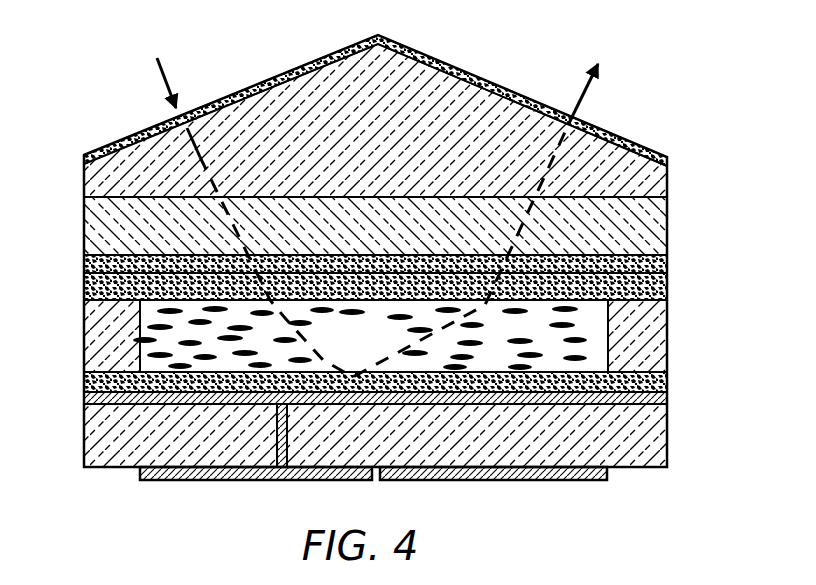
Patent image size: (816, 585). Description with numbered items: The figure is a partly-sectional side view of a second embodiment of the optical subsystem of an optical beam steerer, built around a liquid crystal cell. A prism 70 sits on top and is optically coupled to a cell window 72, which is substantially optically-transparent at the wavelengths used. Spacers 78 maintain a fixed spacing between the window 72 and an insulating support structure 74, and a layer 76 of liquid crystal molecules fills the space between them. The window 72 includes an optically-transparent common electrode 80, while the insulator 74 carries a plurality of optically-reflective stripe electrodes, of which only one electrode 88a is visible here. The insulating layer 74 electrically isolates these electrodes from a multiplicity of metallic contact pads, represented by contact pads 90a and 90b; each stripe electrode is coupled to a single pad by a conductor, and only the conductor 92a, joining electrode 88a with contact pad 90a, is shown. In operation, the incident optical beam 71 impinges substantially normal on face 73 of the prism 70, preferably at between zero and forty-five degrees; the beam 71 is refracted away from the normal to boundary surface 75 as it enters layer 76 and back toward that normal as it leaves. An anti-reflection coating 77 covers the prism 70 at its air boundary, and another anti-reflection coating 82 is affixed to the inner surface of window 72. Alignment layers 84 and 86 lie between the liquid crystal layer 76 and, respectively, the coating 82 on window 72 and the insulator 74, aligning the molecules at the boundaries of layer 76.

The prism 70 is at (408, 72).
The incident optical beam 71 is at (160, 80).
The cell window 72 is at (658, 223).
The face of prism 73 is at (338, 53).
The insulating support structure 74 is at (657, 448).
The boundary surface 75 is at (200, 148).
The layer of liquid crystal molecules 76 is at (360, 338).
The anti-reflection coating 77 is at (505, 90).
The spacers 78 is at (92, 343).
The common electrode 80 is at (398, 264).
The anti-reflection coating 82 is at (408, 260).
The alignment layer 84 is at (370, 300).
The alignment layer 86 is at (270, 377).
The stripe electrode 88a is at (228, 404).
The contact pad 90a is at (207, 480).
The contact pad 90b is at (523, 481).
The conductor 92a is at (288, 428).